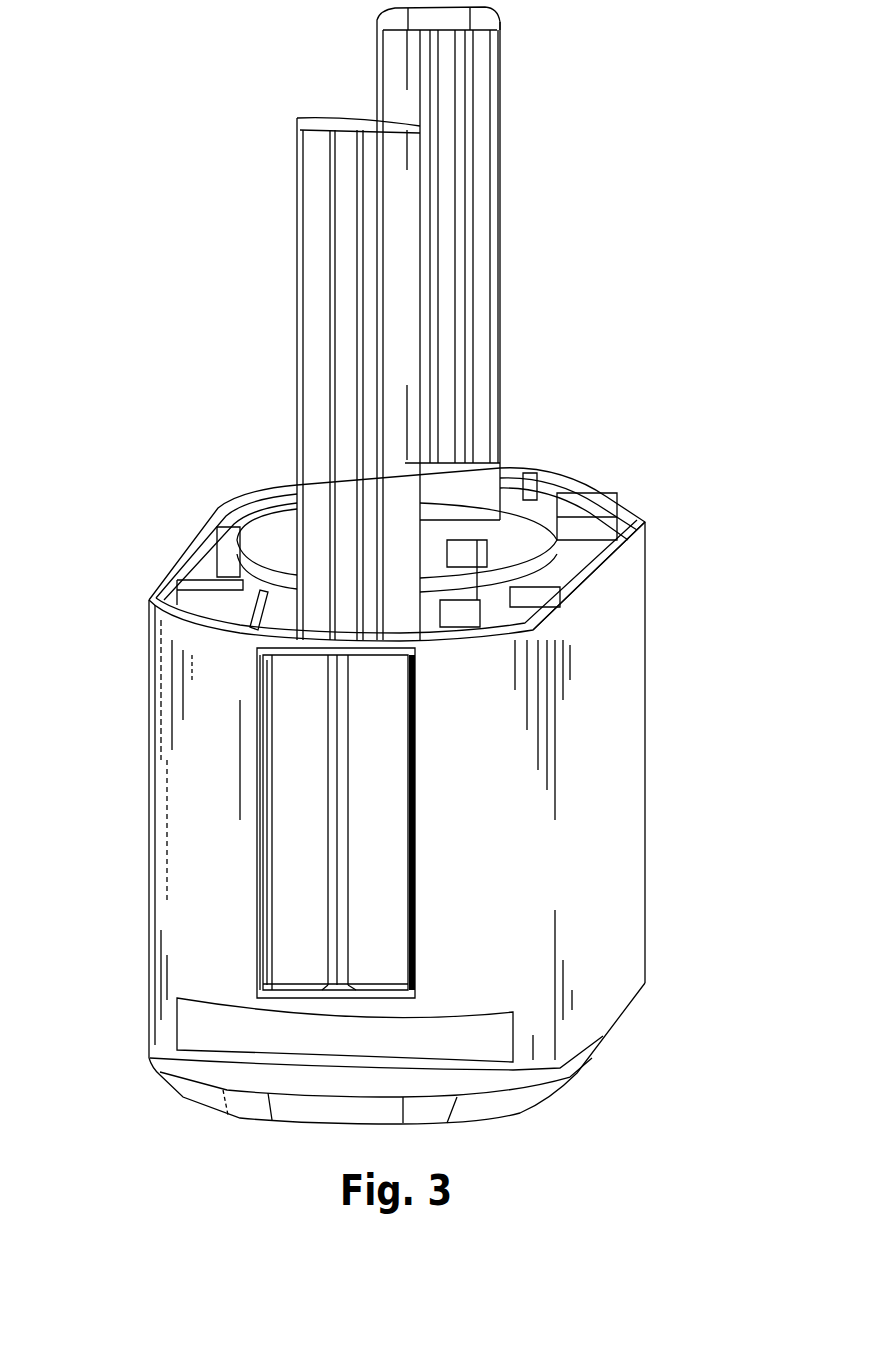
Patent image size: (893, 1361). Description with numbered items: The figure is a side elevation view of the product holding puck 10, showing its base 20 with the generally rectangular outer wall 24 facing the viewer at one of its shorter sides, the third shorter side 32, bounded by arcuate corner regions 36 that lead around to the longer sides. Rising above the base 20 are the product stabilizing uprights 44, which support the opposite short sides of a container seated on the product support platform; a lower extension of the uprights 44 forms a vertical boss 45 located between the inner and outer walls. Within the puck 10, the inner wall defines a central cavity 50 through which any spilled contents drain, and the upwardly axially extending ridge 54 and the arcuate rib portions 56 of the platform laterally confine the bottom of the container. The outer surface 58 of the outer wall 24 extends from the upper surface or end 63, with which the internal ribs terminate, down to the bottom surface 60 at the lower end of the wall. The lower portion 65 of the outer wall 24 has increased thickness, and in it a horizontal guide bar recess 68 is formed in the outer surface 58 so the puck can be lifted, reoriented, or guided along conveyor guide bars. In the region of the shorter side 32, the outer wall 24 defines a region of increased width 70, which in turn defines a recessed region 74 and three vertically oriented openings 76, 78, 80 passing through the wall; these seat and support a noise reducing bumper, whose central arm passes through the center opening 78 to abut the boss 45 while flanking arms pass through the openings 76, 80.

The product holding puck 10 is at (400, 586).
The base 20 is at (676, 523).
The outer wall 24 is at (137, 748).
The third shorter side 32 is at (233, 717).
The arcuate corner regions 36 is at (167, 830).
The product stabilizing uprights 44 is at (515, 322).
The vertical boss 45 is at (345, 814).
The central cavity 50 is at (240, 803).
The upwardly axially extending ridge 54 is at (473, 537).
The axially extending arcuate rib portions 56 is at (540, 530).
The outer surface 58 is at (545, 887).
The bottom surface 60 is at (303, 1122).
The upper surface or end 63 is at (585, 607).
The lower portion 65 is at (137, 1070).
The horizontal guide bar recesses 68 is at (508, 1037).
The region of increased outer wall width 70 is at (292, 867).
The recessed region 74 is at (391, 755).
The vertical opening 76 is at (340, 898).
The center vertical opening 78 is at (267, 930).
The vertical opening 80 is at (413, 950).